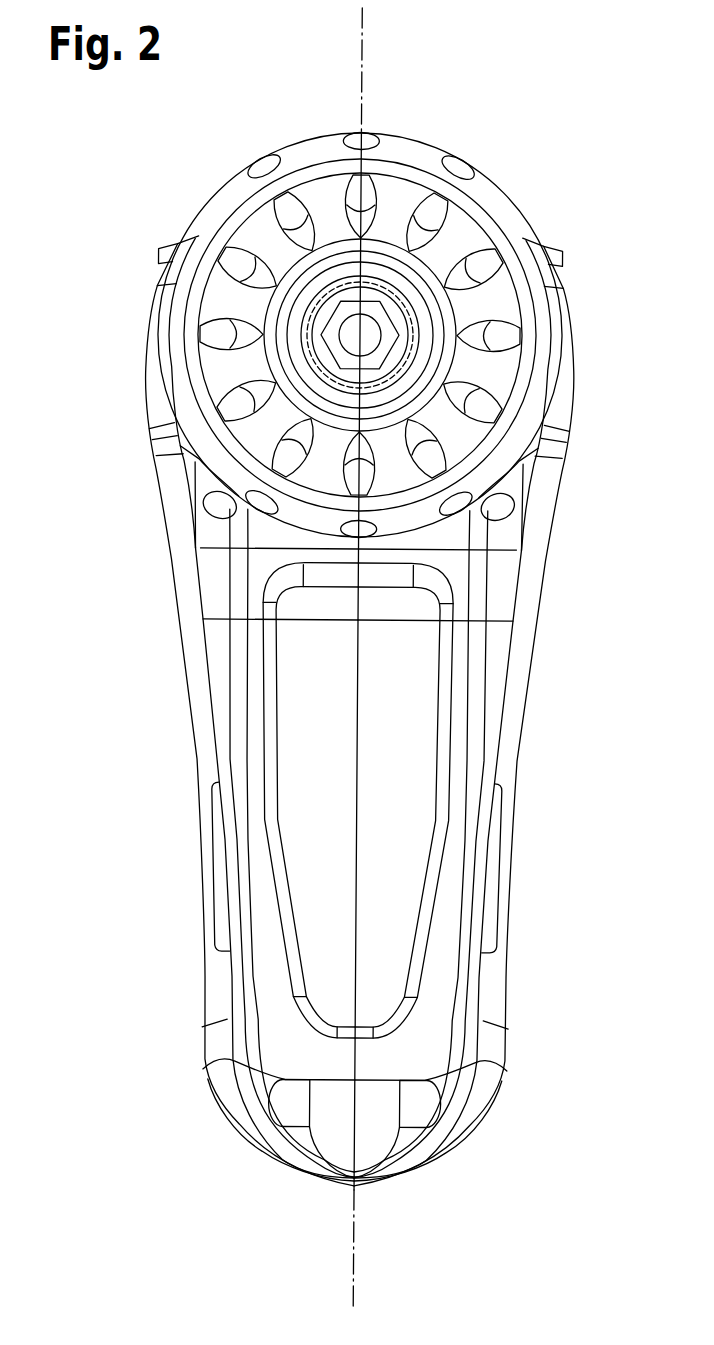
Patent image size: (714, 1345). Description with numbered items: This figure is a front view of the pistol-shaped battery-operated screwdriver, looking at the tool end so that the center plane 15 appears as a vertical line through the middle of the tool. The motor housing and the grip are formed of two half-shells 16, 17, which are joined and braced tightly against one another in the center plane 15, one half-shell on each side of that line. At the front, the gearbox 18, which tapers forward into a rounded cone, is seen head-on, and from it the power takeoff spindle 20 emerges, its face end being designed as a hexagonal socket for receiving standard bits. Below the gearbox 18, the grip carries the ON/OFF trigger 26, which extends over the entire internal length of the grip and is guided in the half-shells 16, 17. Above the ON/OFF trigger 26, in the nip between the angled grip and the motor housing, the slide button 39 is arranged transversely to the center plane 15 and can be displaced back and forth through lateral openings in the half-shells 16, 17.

The center plane 15 is at (362, 25).
The half-shell 16 is at (395, 1053).
The half-shell 17 is at (318, 1055).
The gearbox 18 is at (406, 152).
The power takeoff spindle 20 is at (379, 296).
The ON/OFF trigger 26 is at (400, 752).
The slide button 39 is at (204, 507).